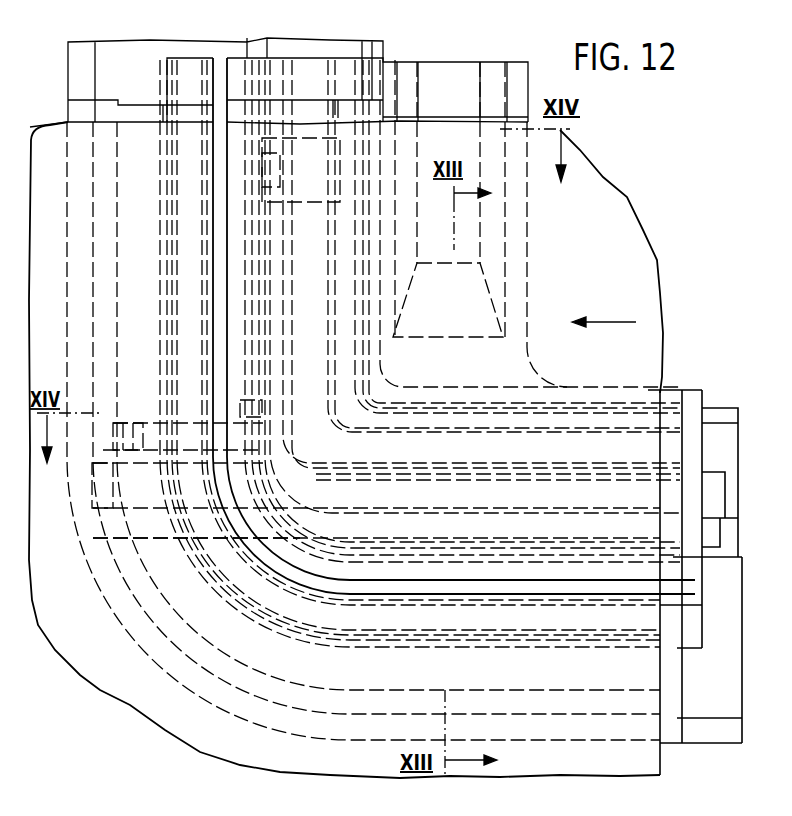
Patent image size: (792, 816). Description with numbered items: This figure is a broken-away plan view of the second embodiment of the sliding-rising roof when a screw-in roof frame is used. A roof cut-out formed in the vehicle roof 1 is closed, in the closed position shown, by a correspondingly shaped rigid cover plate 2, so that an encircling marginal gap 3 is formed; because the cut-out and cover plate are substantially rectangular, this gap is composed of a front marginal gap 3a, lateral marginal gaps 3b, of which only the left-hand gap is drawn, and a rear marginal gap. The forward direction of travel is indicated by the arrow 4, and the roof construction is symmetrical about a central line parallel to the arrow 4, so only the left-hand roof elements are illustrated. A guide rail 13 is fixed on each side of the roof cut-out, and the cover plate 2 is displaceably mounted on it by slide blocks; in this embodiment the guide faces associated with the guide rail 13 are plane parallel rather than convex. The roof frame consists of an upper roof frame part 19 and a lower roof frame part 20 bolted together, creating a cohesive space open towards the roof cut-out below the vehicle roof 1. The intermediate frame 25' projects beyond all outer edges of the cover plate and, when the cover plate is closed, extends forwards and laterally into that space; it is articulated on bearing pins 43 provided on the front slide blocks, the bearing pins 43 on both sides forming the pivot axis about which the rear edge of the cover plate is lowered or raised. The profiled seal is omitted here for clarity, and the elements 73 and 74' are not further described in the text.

The vehicle roof 1 is at (167, 692).
The cover plate 2 is at (346, 450).
The marginal gap 3 is at (406, 349).
The front marginal gap 3a is at (215, 218).
The lateral marginal gap 3b is at (543, 590).
The arrow 4 is at (613, 321).
The guide rail 13 is at (712, 537).
The upper roof frame part 19 is at (672, 674).
The lower roof frame part 20 is at (722, 700).
The intermediate frame 25' is at (279, 70).
The bearing pin 43 is at (128, 423).
The line 73 is at (95, 530).
The support element 74' is at (73, 494).